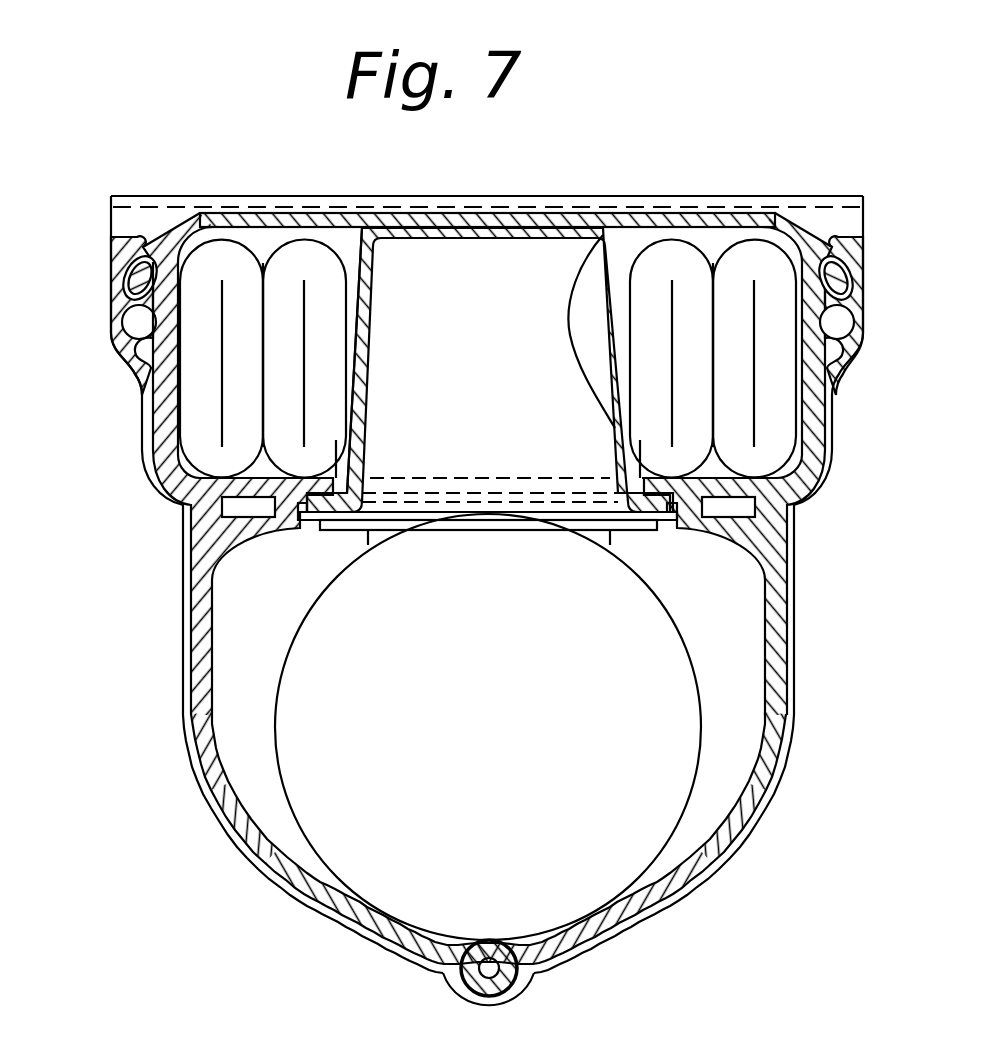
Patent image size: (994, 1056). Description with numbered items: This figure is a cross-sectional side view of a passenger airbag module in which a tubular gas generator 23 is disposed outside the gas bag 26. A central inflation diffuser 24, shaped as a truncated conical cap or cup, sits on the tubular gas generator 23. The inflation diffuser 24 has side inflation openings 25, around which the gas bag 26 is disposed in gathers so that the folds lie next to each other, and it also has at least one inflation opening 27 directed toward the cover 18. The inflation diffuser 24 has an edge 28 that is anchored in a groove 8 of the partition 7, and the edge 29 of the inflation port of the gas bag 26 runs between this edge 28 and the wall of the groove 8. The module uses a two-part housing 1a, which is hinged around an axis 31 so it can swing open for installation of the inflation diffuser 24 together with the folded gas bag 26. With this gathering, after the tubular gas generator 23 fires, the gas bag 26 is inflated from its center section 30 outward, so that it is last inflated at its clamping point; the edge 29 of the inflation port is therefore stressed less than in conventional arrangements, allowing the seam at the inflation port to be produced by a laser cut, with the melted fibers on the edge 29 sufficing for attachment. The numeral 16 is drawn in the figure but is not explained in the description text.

The two-part housing 1a is at (200, 645).
The partition 7 is at (785, 490).
The groove 8 is at (200, 493).
The outer shell 16 is at (794, 650).
The cover 18 is at (736, 222).
The tubular gas generator 23 is at (333, 670).
The central inflation diffuser 24 is at (553, 222).
The side inflation openings 25 is at (603, 235).
The gas bag 26 is at (765, 260).
The inflation opening 27 is at (490, 225).
The edge 28 is at (727, 473).
The edge of the inflation port 29 is at (620, 522).
The center section 30 is at (366, 223).
The axis 31 is at (510, 987).